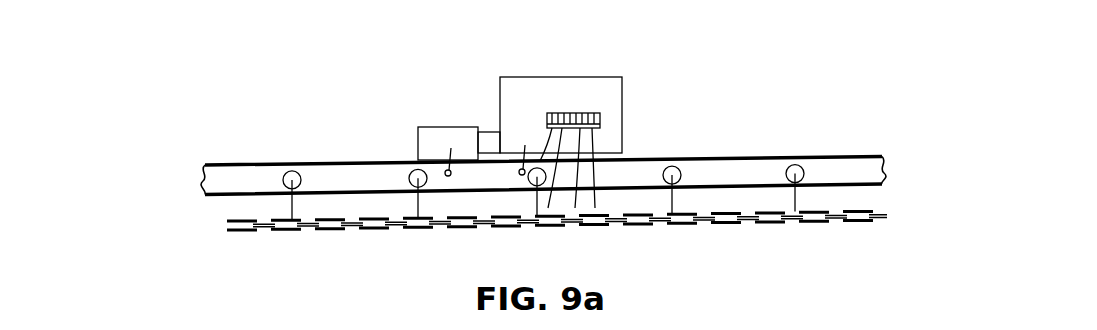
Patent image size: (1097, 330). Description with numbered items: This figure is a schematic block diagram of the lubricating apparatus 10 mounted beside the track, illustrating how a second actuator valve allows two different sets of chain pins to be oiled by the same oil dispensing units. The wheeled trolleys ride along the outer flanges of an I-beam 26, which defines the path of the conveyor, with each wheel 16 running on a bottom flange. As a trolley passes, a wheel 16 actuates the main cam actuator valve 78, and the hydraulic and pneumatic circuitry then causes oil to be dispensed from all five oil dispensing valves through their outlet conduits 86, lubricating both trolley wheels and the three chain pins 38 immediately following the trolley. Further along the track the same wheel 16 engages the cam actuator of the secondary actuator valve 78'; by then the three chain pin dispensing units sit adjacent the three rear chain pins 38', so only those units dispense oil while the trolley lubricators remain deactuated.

The lubricating apparatus 10 is at (551, 72).
The wheel 16 is at (527, 186).
The I-beam 26 is at (837, 155).
The chain pins 38 is at (427, 238).
The rear chain pins 38' is at (755, 236).
The main cam actuator valve 78 is at (519, 132).
The secondary actuator valve 78' is at (450, 131).
The outlet conduit 86 is at (551, 183).